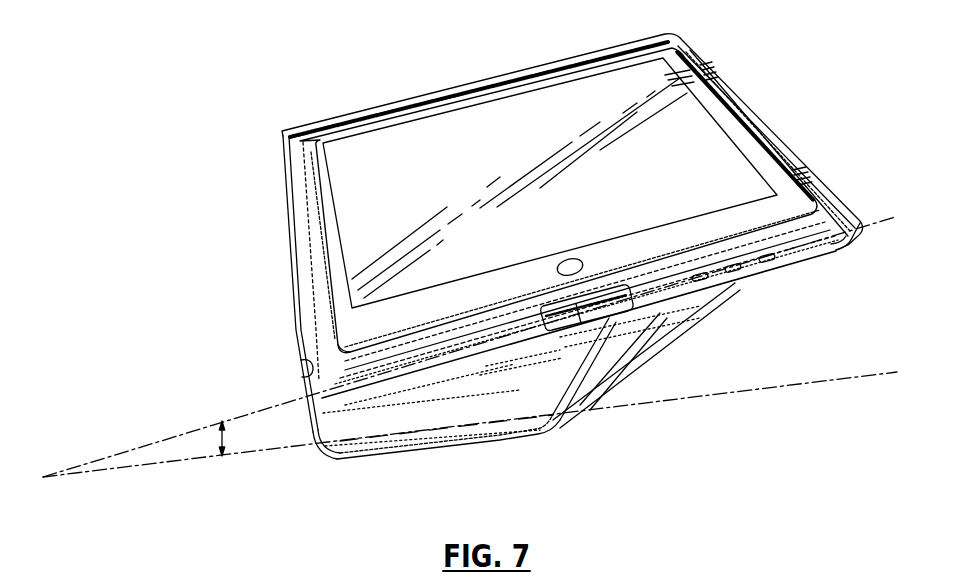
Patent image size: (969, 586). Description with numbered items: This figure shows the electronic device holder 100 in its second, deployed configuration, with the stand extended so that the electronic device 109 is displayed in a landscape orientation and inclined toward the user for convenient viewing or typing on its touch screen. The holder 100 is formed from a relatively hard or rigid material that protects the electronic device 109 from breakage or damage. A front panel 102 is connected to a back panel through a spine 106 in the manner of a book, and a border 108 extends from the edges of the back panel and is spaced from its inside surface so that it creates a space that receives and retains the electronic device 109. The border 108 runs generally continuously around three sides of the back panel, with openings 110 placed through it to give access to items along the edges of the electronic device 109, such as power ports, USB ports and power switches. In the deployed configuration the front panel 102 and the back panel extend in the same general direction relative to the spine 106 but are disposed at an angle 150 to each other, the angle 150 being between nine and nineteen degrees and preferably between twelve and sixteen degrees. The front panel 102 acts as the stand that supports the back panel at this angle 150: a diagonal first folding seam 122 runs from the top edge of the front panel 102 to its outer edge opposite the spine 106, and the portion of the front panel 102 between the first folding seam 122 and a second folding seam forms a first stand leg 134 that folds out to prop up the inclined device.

The electronic device holder 100 is at (295, 116).
The front panel 102 is at (434, 420).
The spine 106 is at (313, 423).
The border 108 is at (370, 361).
The electronic device 109 is at (345, 277).
The openings 110 is at (579, 310).
The first folding seam 122 is at (550, 432).
The first stand leg 134 is at (582, 380).
The angle 150 is at (218, 441).